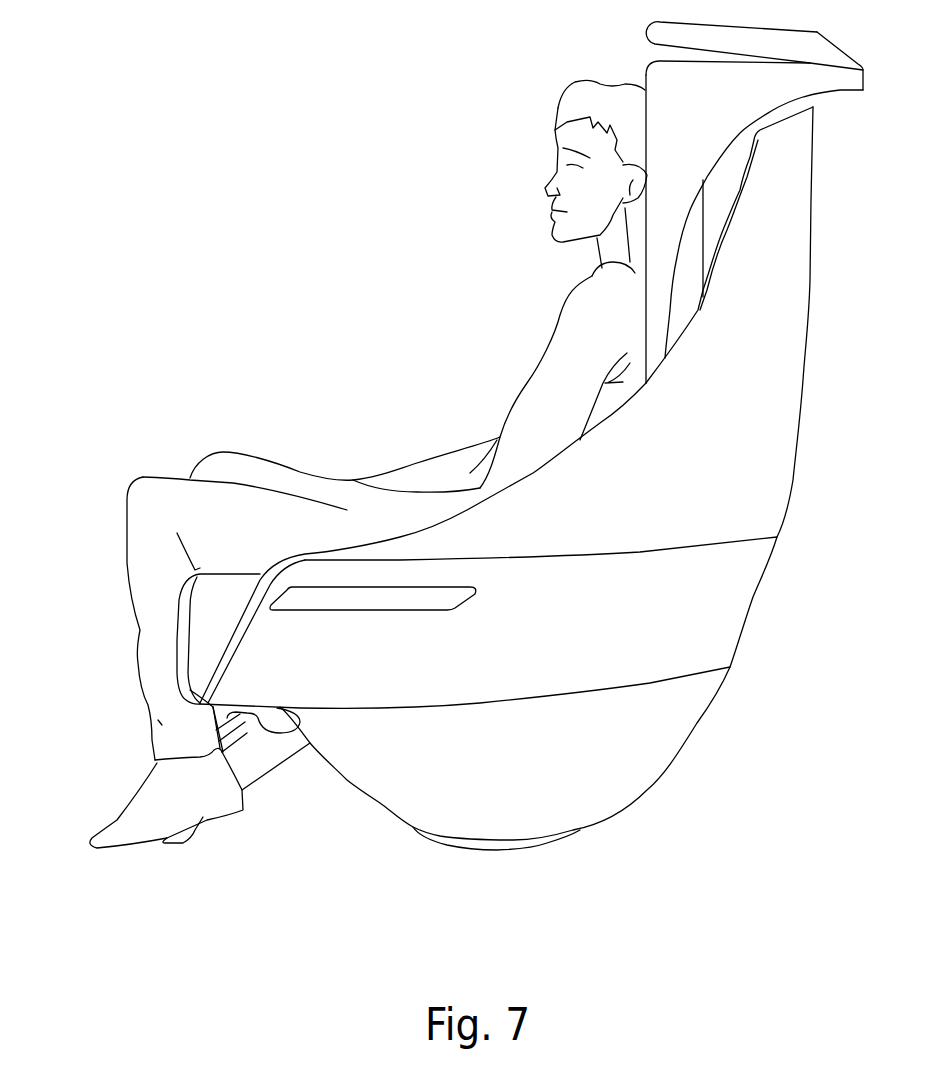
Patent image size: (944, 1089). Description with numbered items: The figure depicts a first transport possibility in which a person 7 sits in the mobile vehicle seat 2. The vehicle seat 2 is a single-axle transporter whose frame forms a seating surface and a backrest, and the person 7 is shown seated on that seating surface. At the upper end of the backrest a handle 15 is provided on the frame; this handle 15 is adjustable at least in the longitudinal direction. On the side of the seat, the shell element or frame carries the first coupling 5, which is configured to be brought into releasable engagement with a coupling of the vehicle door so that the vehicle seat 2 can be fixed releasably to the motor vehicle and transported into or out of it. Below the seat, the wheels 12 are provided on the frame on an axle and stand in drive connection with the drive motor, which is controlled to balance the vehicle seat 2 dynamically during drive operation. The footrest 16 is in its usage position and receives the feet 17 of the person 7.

The vehicle seat 2 is at (540, 491).
The first coupling 5 is at (393, 597).
The person 7 is at (337, 464).
The wheels 12 is at (500, 851).
The handle 15 is at (660, 32).
The footrest 16 is at (253, 748).
The feet 17 is at (133, 820).